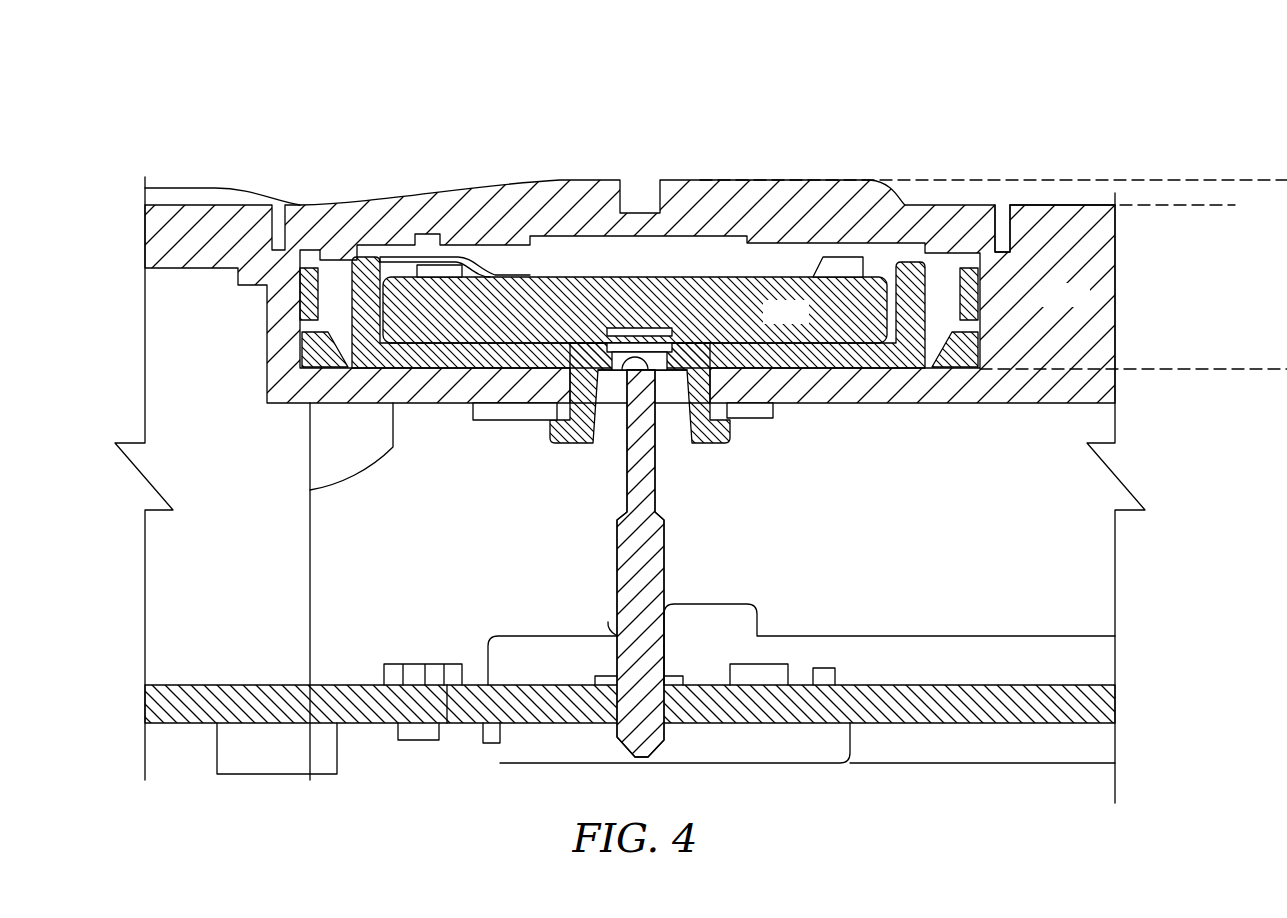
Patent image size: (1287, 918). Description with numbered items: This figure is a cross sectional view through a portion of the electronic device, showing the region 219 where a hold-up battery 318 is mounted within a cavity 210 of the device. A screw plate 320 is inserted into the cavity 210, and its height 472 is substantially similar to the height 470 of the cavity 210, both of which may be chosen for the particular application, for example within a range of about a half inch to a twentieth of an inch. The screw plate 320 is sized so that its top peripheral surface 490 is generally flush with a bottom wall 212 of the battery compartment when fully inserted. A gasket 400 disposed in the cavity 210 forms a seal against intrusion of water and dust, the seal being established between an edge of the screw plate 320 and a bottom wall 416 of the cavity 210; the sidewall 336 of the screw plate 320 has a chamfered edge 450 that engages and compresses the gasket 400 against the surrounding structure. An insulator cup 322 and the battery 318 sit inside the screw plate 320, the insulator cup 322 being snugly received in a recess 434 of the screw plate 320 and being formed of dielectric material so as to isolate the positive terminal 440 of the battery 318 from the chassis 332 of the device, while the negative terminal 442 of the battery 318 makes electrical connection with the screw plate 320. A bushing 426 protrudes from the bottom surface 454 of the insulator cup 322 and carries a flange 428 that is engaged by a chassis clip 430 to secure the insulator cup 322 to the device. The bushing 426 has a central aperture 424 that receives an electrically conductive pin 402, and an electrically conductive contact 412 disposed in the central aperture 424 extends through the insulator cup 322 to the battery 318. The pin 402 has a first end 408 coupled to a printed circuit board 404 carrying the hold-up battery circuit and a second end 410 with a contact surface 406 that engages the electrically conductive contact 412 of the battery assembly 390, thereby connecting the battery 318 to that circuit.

The valve assembly 219 is at (200, 108).
The cavity 210 is at (278, 228).
The bottom wall 212 is at (1065, 205).
The screw plate 320 is at (1002, 205).
The insulator cup 322 is at (915, 305).
The chassis 332 is at (1086, 311).
The hold-up battery 318 is at (806, 328).
The sidewall 336 is at (343, 244).
The battery assembly 390 is at (490, 180).
The gasket 400 is at (298, 350).
The electrically conductive pin 402 is at (657, 754).
The printed circuit board 404 is at (142, 697).
The contact surface 406 is at (630, 322).
The first end 408 is at (582, 683).
The second end 410 is at (618, 487).
The electrically conductive contact 412 is at (698, 341).
The bottom wall 416 is at (312, 378).
The central aperture 424 is at (678, 443).
The bushing 426 is at (656, 344).
The flange 428 is at (713, 452).
The chassis clip 430 is at (765, 427).
The recess 434 is at (414, 258).
The positive terminal 440 is at (834, 350).
The negative terminal 442 is at (532, 272).
The chamfered edge 450 is at (333, 318).
The bottom surface 454 is at (468, 350).
The height 470 is at (1200, 206).
The height 472 is at (1258, 368).
The top peripheral surface 490 is at (882, 196).